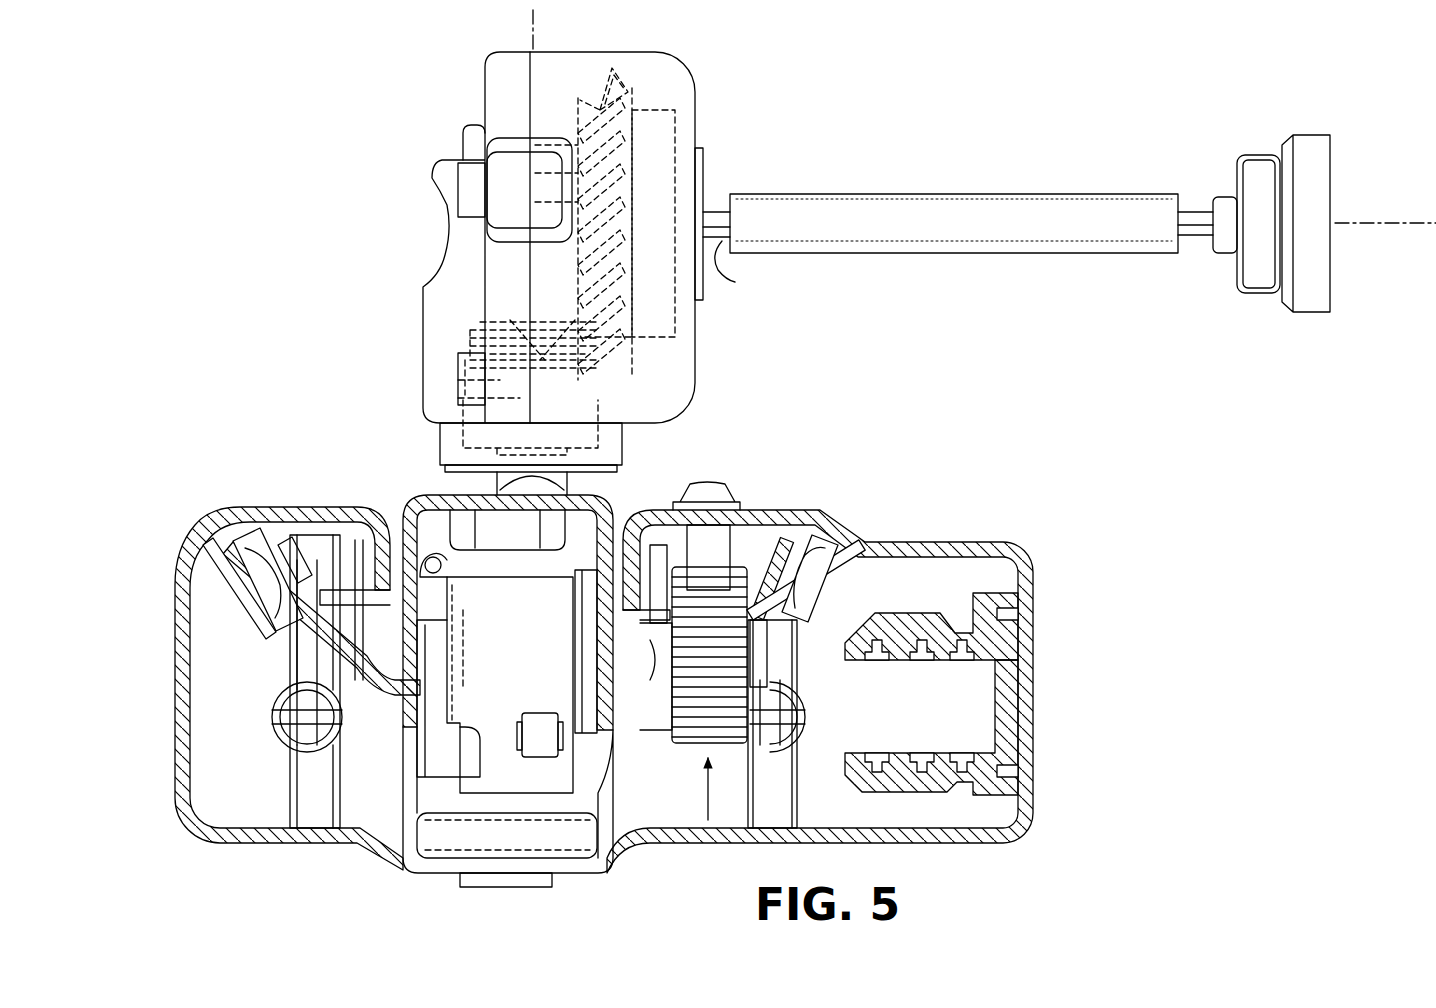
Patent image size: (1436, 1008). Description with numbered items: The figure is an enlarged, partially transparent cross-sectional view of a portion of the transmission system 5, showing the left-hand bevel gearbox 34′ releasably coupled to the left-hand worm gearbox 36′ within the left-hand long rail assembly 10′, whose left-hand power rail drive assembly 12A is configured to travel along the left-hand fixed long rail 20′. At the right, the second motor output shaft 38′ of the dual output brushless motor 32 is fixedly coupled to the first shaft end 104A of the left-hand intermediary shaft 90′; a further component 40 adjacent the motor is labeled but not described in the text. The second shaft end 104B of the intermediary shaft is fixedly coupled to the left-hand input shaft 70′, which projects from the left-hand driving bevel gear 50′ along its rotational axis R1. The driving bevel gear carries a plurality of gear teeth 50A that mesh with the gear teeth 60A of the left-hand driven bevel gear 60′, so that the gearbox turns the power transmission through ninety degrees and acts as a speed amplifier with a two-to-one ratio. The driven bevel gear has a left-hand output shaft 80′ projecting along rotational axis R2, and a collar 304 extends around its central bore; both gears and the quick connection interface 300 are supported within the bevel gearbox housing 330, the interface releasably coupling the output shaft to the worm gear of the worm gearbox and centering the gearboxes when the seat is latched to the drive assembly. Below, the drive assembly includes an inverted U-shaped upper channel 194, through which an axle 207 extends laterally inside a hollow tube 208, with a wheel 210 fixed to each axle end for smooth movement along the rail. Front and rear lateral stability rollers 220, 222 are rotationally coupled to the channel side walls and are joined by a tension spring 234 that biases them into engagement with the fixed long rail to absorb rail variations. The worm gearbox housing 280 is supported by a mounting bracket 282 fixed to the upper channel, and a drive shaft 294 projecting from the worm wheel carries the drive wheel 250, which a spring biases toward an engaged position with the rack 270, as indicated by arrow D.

The transmission system 5 is at (228, 150).
The left-hand long rail assembly 10′ is at (581, 655).
The left-hand power rail drive assembly 12A is at (412, 500).
The left-hand fixed long rail 20′ is at (180, 545).
The dual output brushless motor 32 is at (1298, 128).
The left-hand bevel gearbox 34′ is at (462, 110).
The left-hand worm gearbox 36′ is at (602, 782).
The second motor output shaft 38′ is at (1196, 212).
The wheel plate 40 is at (1302, 314).
The gear teeth 50A is at (578, 112).
The left-hand driving bevel gear 50′ is at (632, 75).
The gear teeth 60A is at (505, 322).
The left-hand driven bevel gear 60′ is at (460, 338).
The left-hand input shaft 70′ is at (716, 212).
The left-hand output shaft 80′ is at (460, 385).
The left-hand intermediary shaft 90′ is at (910, 190).
The first shaft end 104A is at (1185, 244).
The second shaft end 104B is at (726, 250).
The upper channel 194 is at (425, 482).
The axle 207 is at (274, 670).
The hollow tube 208 is at (372, 722).
The wheel 210 is at (290, 802).
The front lateral stability roller 220 is at (215, 572).
The rear lateral stability roller 222 is at (534, 583).
The tension spring 234 is at (270, 713).
The drive wheel 250 is at (752, 570).
The rack 270 is at (737, 525).
The worm gearbox housing 280 is at (440, 786).
The mounting bracket 282 is at (572, 797).
The drive shaft 294 is at (642, 695).
The quick connection interface 300 is at (572, 485).
The collar 304 is at (700, 380).
The bevel gearbox housing 330 is at (484, 56).
The rotational axis of the driving bevel gear R1 is at (1388, 220).
The rotational axis of the driven bevel gear R2 is at (528, 32).
The arrow D is at (721, 789).